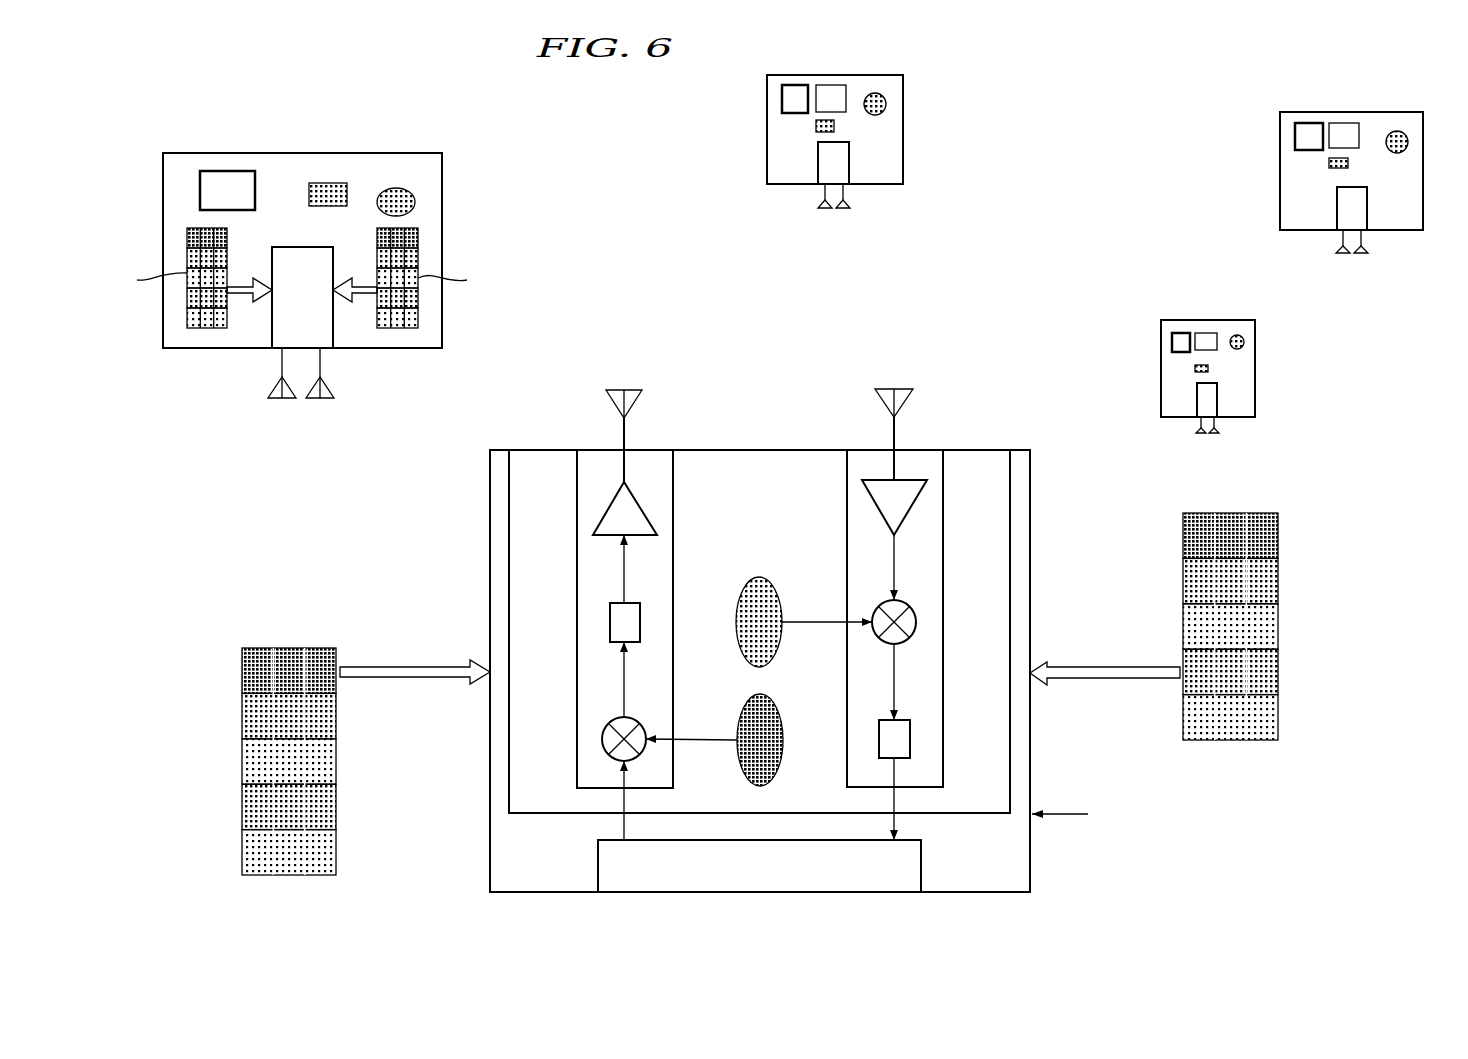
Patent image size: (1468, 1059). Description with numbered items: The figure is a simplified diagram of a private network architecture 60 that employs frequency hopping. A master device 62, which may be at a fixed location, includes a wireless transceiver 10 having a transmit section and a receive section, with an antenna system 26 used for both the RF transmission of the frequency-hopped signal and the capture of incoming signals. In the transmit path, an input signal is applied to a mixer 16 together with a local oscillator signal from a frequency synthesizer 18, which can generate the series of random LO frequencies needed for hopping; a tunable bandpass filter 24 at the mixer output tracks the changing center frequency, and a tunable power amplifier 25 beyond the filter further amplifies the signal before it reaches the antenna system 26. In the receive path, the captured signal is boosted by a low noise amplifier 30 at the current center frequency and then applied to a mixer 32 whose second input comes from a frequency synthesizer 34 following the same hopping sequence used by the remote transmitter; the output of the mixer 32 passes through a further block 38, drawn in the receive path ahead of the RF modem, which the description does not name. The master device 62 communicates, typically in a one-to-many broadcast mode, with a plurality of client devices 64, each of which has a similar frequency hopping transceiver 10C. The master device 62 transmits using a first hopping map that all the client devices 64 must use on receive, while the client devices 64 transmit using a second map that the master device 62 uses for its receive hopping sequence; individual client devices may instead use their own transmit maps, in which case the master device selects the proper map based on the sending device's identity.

The private network architecture 60 is at (1052, 108).
The client device 64 is at (360, 153).
The frequency hopping transceiver 10C is at (313, 328).
The antenna system 26 is at (760, 422).
The wireless transceiver 10 is at (983, 817).
The power amplifier 25 is at (617, 512).
The bandpass filter 24 is at (617, 622).
The mixer 16 is at (601, 738).
The frequency synthesizer 18 is at (768, 695).
The frequency synthesizer 34 is at (768, 578).
The low noise amplifier 30 is at (898, 503).
The mixer 32 is at (920, 625).
The receive filter 38 is at (902, 740).
The master device 62 is at (760, 657).